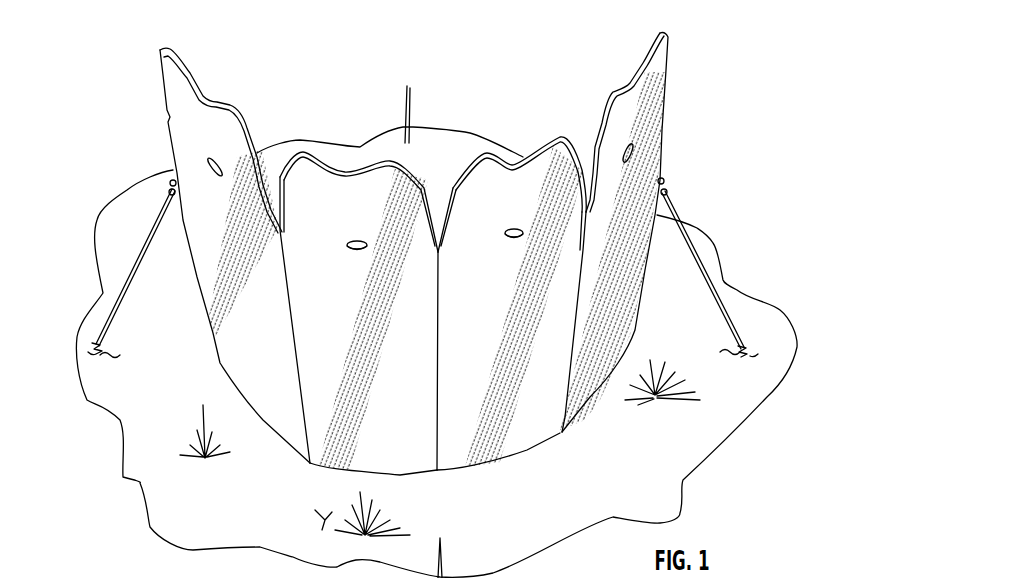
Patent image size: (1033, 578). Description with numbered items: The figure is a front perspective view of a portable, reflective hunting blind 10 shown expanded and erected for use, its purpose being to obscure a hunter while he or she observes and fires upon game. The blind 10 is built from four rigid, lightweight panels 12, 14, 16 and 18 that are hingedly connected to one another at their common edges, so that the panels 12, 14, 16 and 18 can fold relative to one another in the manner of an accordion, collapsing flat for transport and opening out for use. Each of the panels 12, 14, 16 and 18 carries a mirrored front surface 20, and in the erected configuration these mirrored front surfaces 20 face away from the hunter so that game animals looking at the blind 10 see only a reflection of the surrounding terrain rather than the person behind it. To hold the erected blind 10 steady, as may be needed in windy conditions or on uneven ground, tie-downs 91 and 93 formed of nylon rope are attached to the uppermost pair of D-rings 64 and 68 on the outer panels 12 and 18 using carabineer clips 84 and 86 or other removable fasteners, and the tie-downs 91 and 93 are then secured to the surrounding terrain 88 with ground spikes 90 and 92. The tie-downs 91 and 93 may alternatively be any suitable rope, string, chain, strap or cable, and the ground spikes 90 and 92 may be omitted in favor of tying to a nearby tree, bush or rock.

The hunting blind 10 is at (770, 85).
The panel 12 is at (217, 120).
The panel 14 is at (343, 197).
The panel 16 is at (513, 193).
The panel 18 is at (620, 113).
The mirrored front surface 20 is at (533, 433).
The D-ring 64 is at (173, 180).
The D-ring 68 is at (662, 178).
The carabineer clip 84 is at (172, 192).
The carabineer clip 86 is at (667, 193).
The ground surface 88 is at (170, 507).
The ground spike 90 is at (93, 343).
The tie-down 91 is at (143, 247).
The ground spike 92 is at (743, 345).
The tie-down 93 is at (705, 278).